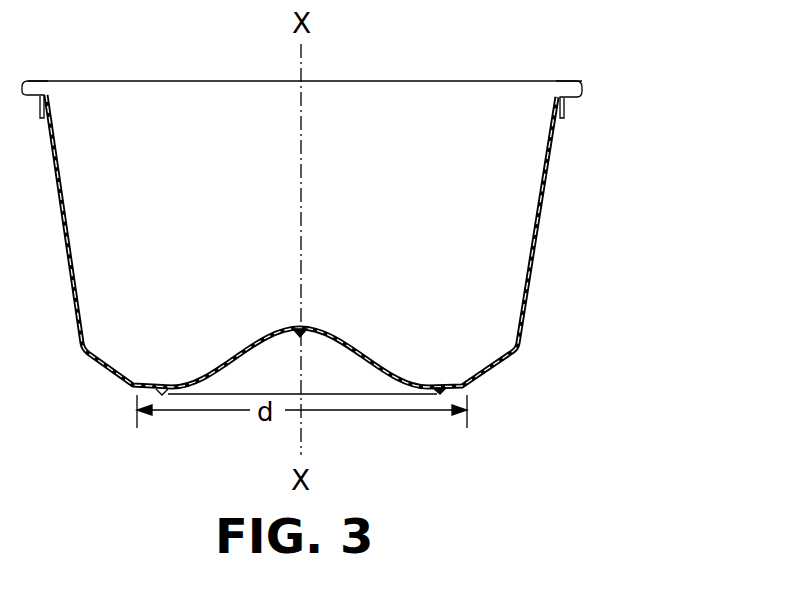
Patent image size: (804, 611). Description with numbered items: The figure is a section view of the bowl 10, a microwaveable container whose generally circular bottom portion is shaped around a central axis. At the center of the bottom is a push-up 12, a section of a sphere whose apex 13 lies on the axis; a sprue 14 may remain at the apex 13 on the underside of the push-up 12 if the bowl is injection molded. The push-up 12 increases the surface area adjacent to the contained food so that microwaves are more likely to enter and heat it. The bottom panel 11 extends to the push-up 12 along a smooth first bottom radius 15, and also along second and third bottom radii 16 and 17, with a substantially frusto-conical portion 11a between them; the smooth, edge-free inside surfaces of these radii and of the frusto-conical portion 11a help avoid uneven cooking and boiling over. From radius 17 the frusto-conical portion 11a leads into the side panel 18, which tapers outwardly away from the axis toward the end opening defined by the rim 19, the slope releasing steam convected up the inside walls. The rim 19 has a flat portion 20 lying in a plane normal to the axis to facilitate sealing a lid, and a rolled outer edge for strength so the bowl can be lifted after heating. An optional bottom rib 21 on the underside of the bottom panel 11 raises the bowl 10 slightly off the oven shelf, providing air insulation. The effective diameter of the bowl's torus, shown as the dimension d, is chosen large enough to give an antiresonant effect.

The bowl 10 is at (441, 197).
The bottom panel 11 is at (448, 395).
The frusto-conical portion 11a is at (497, 370).
The push-up 12 is at (265, 330).
The apex 13 is at (307, 328).
The sprue 14 is at (300, 335).
The first bottom radius 15 is at (190, 383).
The second bottom radius 16 is at (475, 378).
The third bottom radius 17 is at (515, 343).
The side panel 18 is at (538, 228).
The rim 19 is at (582, 88).
The flat portion 20 is at (567, 81).
The bottom rib 21 is at (163, 395).